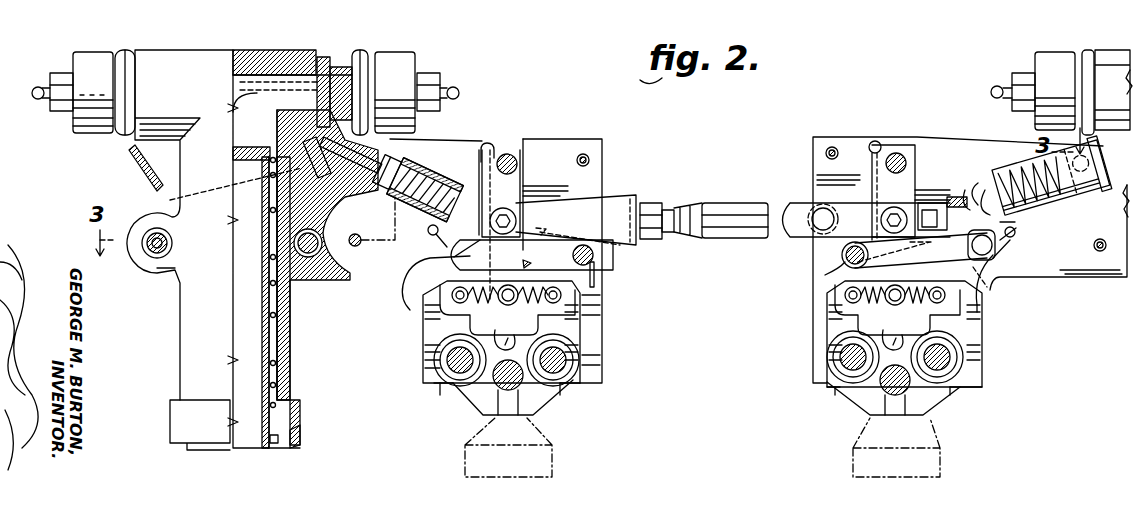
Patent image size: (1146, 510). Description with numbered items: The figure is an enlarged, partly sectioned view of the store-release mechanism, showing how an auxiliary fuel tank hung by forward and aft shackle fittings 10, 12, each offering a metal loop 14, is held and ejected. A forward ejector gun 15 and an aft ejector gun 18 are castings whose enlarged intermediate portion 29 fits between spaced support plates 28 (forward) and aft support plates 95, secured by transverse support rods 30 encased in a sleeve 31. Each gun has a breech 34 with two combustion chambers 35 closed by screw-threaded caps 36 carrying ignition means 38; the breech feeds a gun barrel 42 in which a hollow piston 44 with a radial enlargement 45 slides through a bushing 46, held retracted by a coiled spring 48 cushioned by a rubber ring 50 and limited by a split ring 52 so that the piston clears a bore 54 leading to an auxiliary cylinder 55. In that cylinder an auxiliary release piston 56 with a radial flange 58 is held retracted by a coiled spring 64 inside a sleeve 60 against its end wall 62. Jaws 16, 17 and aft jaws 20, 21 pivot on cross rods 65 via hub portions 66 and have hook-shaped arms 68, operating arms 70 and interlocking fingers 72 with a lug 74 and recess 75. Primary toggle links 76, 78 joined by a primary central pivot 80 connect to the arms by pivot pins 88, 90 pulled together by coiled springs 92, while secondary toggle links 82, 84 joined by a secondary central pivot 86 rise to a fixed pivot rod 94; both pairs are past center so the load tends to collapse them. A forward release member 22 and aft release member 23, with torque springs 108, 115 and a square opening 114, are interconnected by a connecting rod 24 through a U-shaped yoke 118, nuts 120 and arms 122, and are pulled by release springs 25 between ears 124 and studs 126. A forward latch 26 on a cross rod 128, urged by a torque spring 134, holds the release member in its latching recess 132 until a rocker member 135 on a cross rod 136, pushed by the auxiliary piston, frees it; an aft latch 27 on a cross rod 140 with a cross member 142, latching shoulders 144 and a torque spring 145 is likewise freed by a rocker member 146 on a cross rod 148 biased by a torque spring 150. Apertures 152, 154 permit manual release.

The forward shackle fitting 10 is at (465, 458).
The aft shackle fitting 12 is at (942, 448).
The metal loop 14 is at (495, 392).
The forward ejector gun 15 is at (202, 52).
The jaw 16 is at (470, 385).
The jaw 17 is at (530, 395).
The aft ejector gun 18 is at (1108, 52).
The jaw 20 is at (860, 393).
The jaw 21 is at (930, 400).
The forward release member 22 is at (528, 143).
The aft release member 23 is at (915, 145).
The connecting rod 24 is at (730, 240).
The release springs 25 is at (980, 183).
The forward latch 26 is at (412, 275).
The aft latch 27 is at (982, 286).
The support plates 28 is at (595, 146).
The intermediate portion 29 is at (178, 270).
The support rods 30 is at (308, 258).
The sleeve 31 is at (150, 252).
The breech 34 is at (258, 52).
The combustion chambers 35 is at (124, 52).
The screw-threaded caps 36 is at (88, 55).
The ignition means 38 is at (38, 87).
The gun barrel 42 is at (286, 350).
The hollow piston 44 is at (286, 380).
The radial enlargement 45 is at (272, 152).
The bushing 46 is at (298, 442).
The coiled spring 48 is at (286, 300).
The rubber ring 50 is at (300, 420).
The split ring 52 is at (275, 442).
The bore 54 is at (284, 140).
The auxiliary cylinder 55 is at (352, 188).
The auxiliary release piston 56 is at (378, 192).
The radial flange 58 is at (370, 220).
The sleeve 60 is at (445, 207).
The end wall 62 is at (443, 178).
The coiled spring 64 is at (398, 165).
The cross rods 65 is at (440, 365).
The hub portions 66 is at (445, 385).
The hook-shaped arms 68 is at (478, 418).
The operating arms 70 is at (425, 340).
The fingers 72 is at (470, 308).
The lug 74 is at (500, 338).
The recess 75 is at (512, 338).
The primary toggle link 76 is at (482, 288).
The primary toggle link 78 is at (535, 288).
The primary central pivot 80 is at (507, 285).
The secondary toggle link 82 is at (520, 263).
The secondary toggle link 84 is at (540, 191).
The secondary central pivot 86 is at (517, 221).
The pivot pin 88 is at (452, 298).
The pivot pin 90 is at (320, 60).
The coiled springs 92 is at (562, 295).
The fixed pivot rod 94 is at (510, 154).
The aft support plates 95 is at (813, 143).
The torque springs 108 is at (492, 142).
The square opening 114 is at (932, 203).
The torque spring 115 is at (873, 141).
The U-shaped yoke 118 is at (628, 197).
The nuts 120 is at (663, 205).
The arms 122 is at (818, 203).
The ears 124 is at (968, 190).
The studs 126 is at (1072, 190).
The cross rod 128 is at (595, 255).
The latching recess 132 is at (470, 246).
The torque spring 134 is at (595, 277).
The rocker member 135 is at (478, 160).
The cross rod 136 is at (428, 234).
The cross rod 140 is at (842, 255).
The cross member 142 is at (980, 306).
The latching shoulders 144 is at (1012, 222).
The torque spring 145 is at (835, 271).
The rocker member 146 is at (988, 192).
The cross rod 148 is at (1016, 233).
The torque spring 150 is at (1000, 254).
The aperture 152 is at (560, 240).
The aperture 154 is at (971, 258).